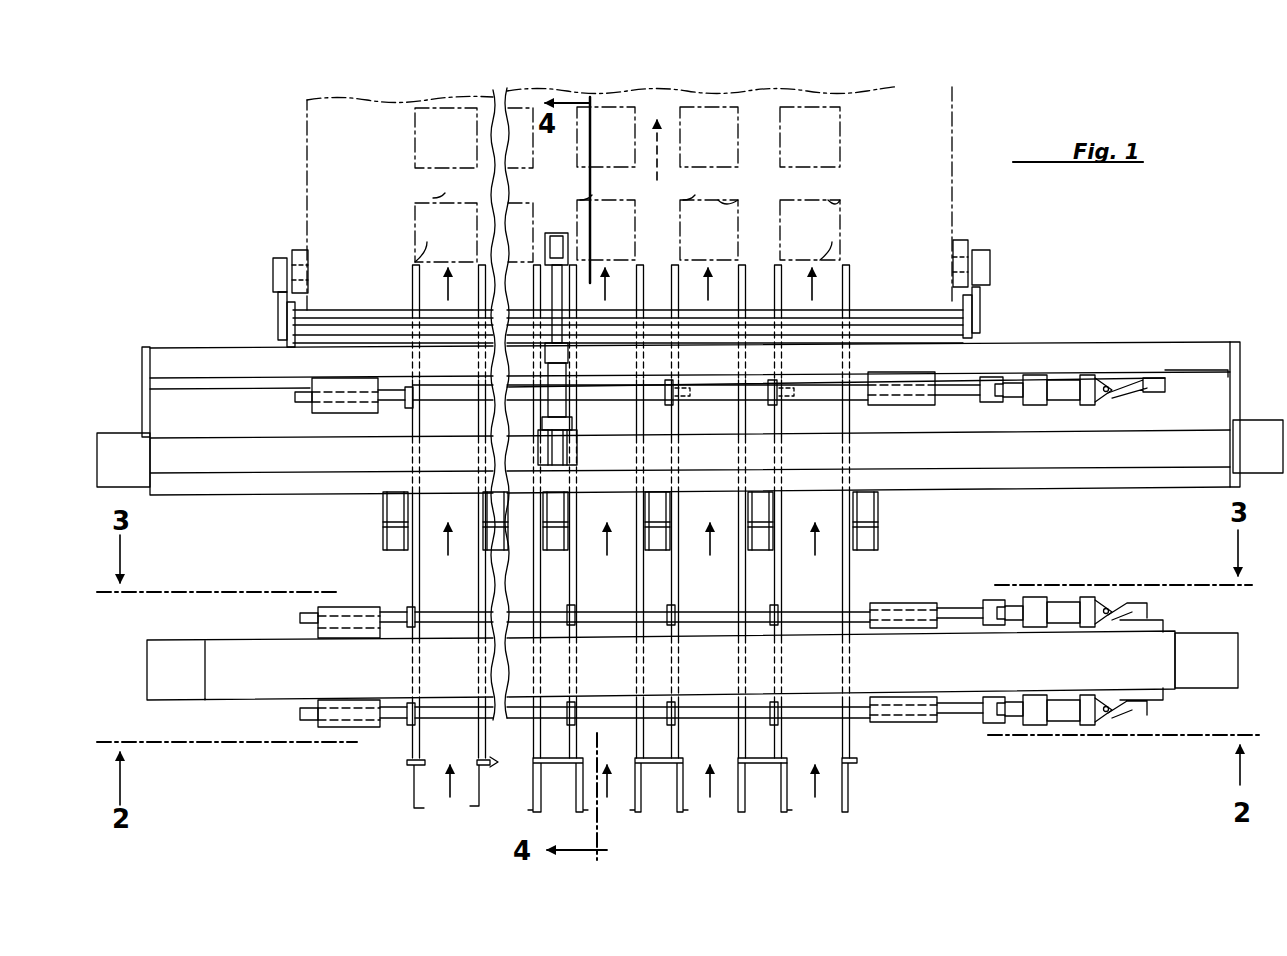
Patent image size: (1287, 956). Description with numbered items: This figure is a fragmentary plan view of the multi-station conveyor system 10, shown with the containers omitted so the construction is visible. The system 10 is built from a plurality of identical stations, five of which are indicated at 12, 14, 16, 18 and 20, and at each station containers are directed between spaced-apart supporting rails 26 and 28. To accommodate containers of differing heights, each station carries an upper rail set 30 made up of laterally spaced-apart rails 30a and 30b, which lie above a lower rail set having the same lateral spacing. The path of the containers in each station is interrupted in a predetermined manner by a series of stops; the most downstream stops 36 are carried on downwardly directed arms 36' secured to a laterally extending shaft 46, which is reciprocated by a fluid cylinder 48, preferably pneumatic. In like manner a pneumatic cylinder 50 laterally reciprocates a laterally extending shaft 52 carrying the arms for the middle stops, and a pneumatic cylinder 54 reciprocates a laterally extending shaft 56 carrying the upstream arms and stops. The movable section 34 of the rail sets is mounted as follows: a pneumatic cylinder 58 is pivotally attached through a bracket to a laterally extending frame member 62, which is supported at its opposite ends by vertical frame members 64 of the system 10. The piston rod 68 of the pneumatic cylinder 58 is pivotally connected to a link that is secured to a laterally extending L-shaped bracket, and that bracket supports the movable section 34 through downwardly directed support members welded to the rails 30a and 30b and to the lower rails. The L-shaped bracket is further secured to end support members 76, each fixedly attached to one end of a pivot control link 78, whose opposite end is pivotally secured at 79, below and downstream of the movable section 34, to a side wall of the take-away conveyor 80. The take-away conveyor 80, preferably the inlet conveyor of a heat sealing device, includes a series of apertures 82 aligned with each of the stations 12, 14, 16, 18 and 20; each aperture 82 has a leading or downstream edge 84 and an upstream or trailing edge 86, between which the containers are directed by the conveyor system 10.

The multi-station conveyor system 10 is at (1062, 296).
The station 12 is at (442, 797).
The station 14 is at (500, 796).
The station 16 is at (622, 800).
The station 18 is at (722, 800).
The station 20 is at (828, 800).
The supporting rail 26 is at (573, 782).
The supporting rail 28 is at (750, 785).
The upper rail set 30 is at (658, 742).
The rail 30a is at (576, 580).
The rail 30b is at (640, 588).
The movable section 34 is at (998, 322).
The stop 36 is at (581, 391).
The downwardly directed arm 36' is at (750, 407).
The laterally extending shaft 46 is at (970, 390).
The fluid cylinder 48 is at (1072, 392).
The pneumatic cylinder 50 is at (1060, 605).
The laterally extending shaft 52 is at (953, 612).
The pneumatic cylinder 54 is at (1068, 712).
The laterally extending shaft 56 is at (963, 710).
The pneumatic cylinder 58 is at (555, 393).
The laterally extending frame member 62 is at (267, 458).
The vertical frame member 64 is at (122, 452).
The piston rod 68 is at (552, 290).
The end support member 76 is at (280, 298).
The pivot control link 78 is at (280, 330).
The pivot 79 is at (292, 250).
The take-away conveyor 80 is at (301, 165).
The aperture 82 is at (412, 230).
The leading or downstream edge 84 is at (432, 200).
The upstream or trailing edge 86 is at (416, 252).